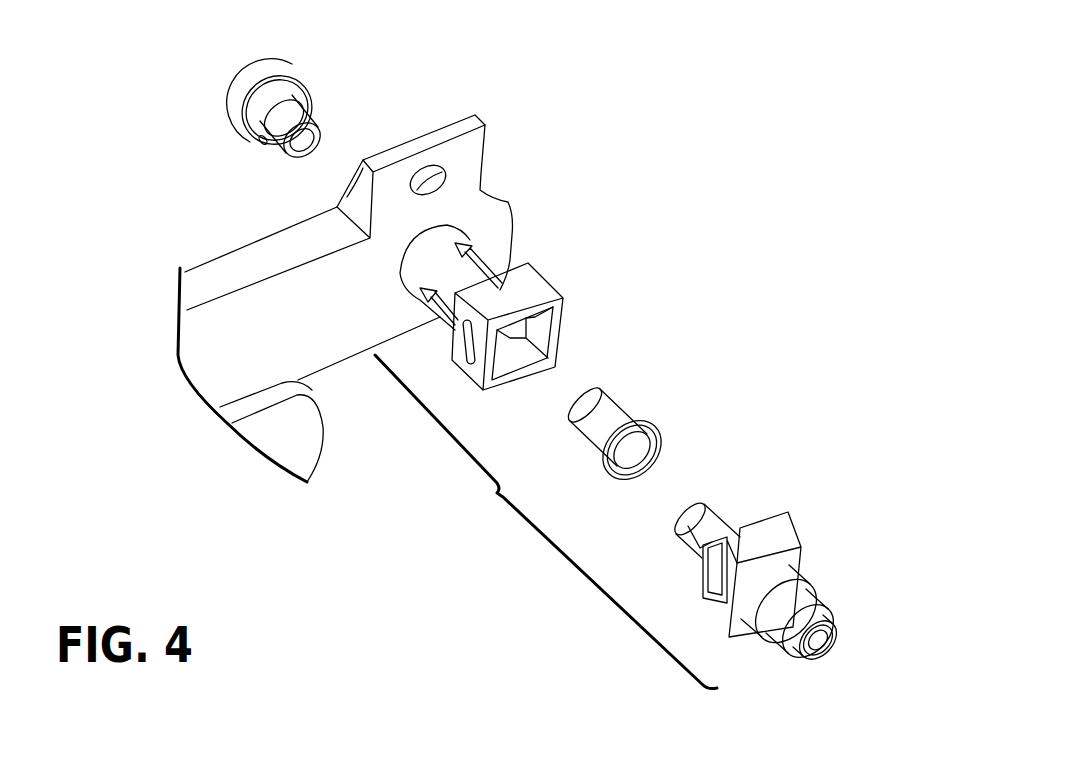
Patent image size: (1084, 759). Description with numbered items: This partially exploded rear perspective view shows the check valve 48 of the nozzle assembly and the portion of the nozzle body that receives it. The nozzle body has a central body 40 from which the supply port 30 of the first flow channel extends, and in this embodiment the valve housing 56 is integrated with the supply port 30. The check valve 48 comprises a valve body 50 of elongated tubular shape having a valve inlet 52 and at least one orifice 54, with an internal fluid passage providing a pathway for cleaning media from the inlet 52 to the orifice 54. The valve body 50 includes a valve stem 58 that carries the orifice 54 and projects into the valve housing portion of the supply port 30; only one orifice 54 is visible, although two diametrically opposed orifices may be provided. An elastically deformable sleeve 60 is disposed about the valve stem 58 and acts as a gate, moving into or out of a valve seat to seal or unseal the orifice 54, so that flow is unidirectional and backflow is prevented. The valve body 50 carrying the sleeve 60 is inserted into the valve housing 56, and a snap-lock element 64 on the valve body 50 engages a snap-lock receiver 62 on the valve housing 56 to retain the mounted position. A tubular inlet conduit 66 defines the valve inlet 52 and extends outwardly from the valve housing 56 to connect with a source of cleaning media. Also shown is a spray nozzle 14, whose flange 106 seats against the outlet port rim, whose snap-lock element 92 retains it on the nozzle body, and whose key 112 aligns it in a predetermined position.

The spray nozzle 14 is at (262, 106).
The flange 106 is at (290, 82).
The snap-lock element 92 is at (293, 102).
The key 112 is at (265, 142).
The supply port 30 is at (458, 244).
The central body 40 is at (293, 330).
The valve housing 56 is at (550, 345).
The snap-lock receiver 62 is at (540, 337).
The elastically deformable sleeve 60 is at (613, 413).
The check valve 48 is at (546, 522).
The valve stem 58 is at (715, 525).
The valve body 50 is at (769, 558).
The orifice 54 is at (702, 537).
The snap-lock element 64 is at (708, 580).
The tubular inlet conduit 66 is at (792, 595).
The valve inlet 52 is at (822, 647).